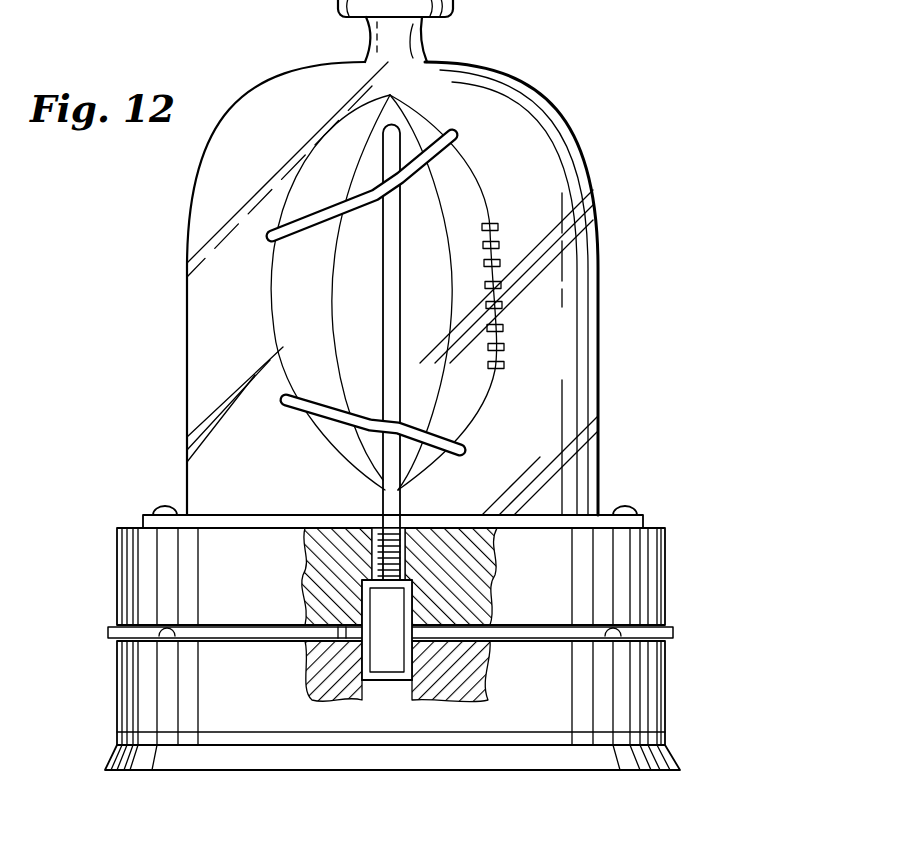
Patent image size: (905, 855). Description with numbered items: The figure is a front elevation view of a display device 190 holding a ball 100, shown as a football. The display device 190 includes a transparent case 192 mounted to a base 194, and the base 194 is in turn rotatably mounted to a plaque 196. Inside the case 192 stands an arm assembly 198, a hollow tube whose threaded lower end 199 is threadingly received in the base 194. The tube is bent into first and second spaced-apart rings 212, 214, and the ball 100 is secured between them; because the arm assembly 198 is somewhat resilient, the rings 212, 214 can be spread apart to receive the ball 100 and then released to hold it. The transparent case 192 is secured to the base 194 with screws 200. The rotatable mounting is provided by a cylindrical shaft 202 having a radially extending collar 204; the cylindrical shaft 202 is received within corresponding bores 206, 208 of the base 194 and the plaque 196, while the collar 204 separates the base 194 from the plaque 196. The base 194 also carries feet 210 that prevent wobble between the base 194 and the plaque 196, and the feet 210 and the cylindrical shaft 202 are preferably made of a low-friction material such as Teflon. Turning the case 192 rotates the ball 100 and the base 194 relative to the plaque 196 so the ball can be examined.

The ball 100 is at (496, 189).
The display device 190 is at (668, 366).
The transparent case 192 is at (586, 168).
The base 194 is at (667, 590).
The plaque 196 is at (667, 690).
The arm assembly 198 is at (372, 292).
The threaded lower end 199 is at (372, 530).
The screws 200 is at (165, 506).
The cylindrical shaft 202 is at (392, 652).
The collar 204 is at (308, 696).
The bore 206 is at (423, 535).
The bore 208 is at (400, 690).
The feet 210 is at (160, 630).
The first ring 212 is at (463, 423).
The second ring 214 is at (325, 210).